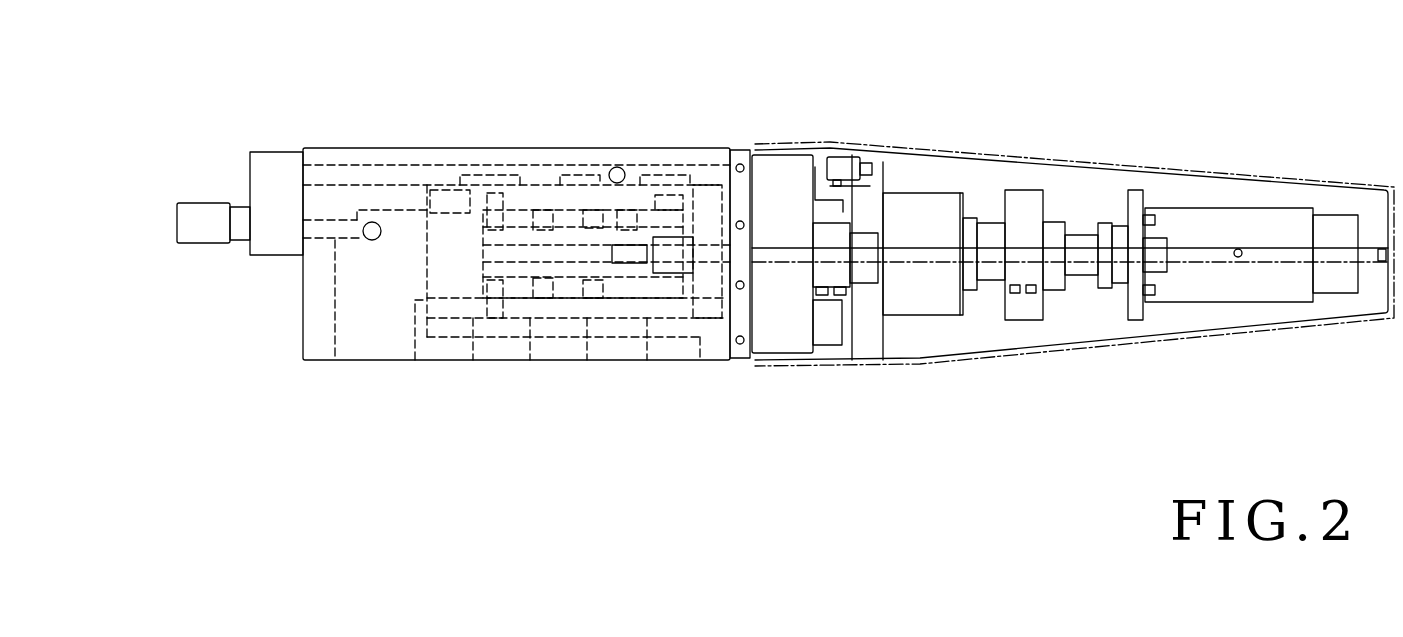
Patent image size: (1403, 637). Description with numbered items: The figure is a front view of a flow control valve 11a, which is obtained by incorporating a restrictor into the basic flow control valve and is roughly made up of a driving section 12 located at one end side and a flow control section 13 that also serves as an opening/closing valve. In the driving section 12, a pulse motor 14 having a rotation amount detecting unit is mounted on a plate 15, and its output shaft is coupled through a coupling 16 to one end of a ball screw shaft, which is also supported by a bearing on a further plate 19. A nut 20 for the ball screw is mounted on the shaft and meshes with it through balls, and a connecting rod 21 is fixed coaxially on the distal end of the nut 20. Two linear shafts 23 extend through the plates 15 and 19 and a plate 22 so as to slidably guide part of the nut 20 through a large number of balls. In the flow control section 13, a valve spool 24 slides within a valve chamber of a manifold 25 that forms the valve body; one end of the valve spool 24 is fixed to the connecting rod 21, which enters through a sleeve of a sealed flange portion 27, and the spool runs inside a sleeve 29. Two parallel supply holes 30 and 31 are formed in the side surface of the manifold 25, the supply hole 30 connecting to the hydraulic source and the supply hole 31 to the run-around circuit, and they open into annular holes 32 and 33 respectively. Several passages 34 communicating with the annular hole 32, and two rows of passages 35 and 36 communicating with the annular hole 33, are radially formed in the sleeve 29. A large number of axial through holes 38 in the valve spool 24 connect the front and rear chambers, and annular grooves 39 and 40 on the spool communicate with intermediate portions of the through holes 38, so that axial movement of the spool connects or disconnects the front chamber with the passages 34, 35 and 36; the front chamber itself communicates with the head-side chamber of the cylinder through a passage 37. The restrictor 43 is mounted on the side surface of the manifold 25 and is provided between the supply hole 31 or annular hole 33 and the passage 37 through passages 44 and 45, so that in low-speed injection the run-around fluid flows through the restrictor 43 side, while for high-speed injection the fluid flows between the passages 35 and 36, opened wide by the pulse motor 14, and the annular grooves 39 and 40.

The flow control valve 11a is at (732, 150).
The driving section 12 is at (1037, 183).
The flow control section 13 is at (305, 142).
The pulse motor 14 is at (1248, 208).
The plate 15 is at (1135, 320).
The coupling 16 is at (1098, 288).
The plate 19 is at (1022, 320).
The nut 20 is at (925, 315).
The connecting rod 21 is at (708, 265).
The plate 22 is at (852, 320).
The linear shafts 23 is at (1075, 275).
The valve spool 24 is at (577, 285).
The manifold 25 is at (338, 148).
The sealed flange portion 27 is at (782, 335).
The sleeve 29 is at (452, 312).
The supply hole 30 is at (493, 363).
The supply hole 31 is at (628, 362).
The annular hole 32 is at (480, 338).
The annular hole 33 is at (597, 330).
The passages 34 is at (492, 196).
The passages 35 is at (590, 188).
The passages 36 is at (668, 180).
The passage 37 is at (380, 362).
The through holes 38 is at (480, 227).
The annular groove 39 is at (547, 220).
The annular groove 40 is at (623, 220).
The restrictor 43 is at (248, 170).
The passage 44 is at (378, 165).
The passage 45 is at (323, 240).